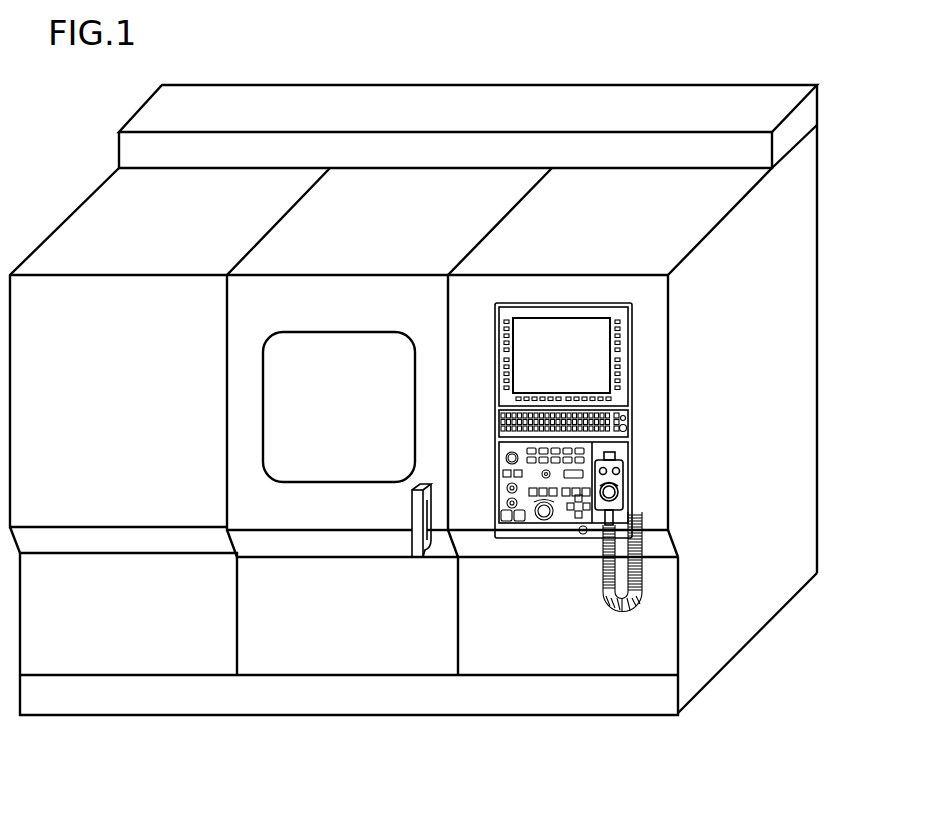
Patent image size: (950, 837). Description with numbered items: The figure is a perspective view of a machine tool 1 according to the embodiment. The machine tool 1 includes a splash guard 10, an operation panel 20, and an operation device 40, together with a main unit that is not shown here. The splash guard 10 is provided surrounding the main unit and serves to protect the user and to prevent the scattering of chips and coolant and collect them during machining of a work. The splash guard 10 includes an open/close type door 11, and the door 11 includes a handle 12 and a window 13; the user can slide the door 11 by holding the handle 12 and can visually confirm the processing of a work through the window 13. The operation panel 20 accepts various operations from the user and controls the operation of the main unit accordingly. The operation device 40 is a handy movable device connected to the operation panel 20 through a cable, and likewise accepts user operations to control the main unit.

The machine tool 1 is at (50, 208).
The splash guard 10 is at (117, 513).
The door 11 is at (260, 513).
The handle 12 is at (418, 540).
The window 13 is at (338, 470).
The operation panel 20 is at (623, 355).
The operation device 40 is at (621, 484).